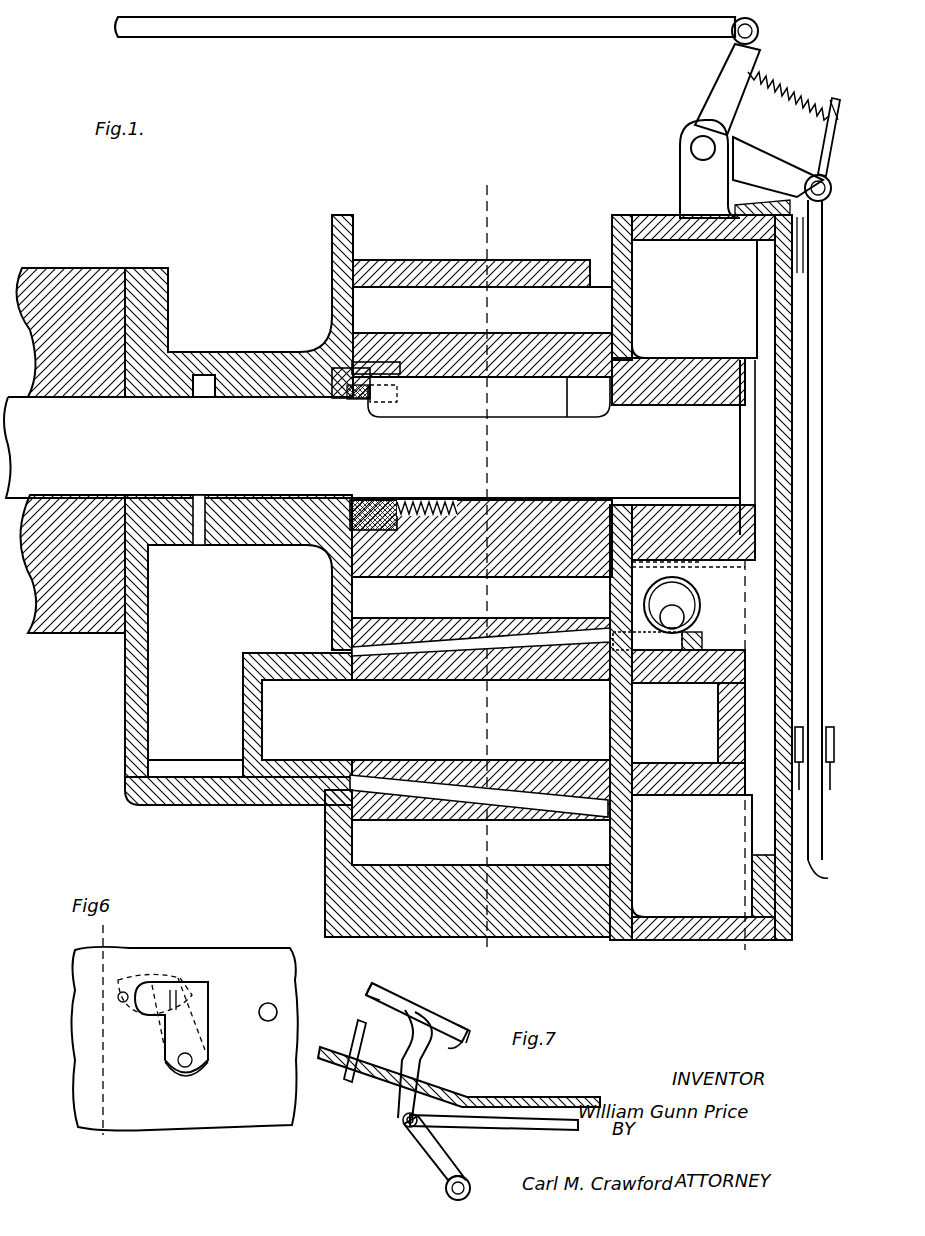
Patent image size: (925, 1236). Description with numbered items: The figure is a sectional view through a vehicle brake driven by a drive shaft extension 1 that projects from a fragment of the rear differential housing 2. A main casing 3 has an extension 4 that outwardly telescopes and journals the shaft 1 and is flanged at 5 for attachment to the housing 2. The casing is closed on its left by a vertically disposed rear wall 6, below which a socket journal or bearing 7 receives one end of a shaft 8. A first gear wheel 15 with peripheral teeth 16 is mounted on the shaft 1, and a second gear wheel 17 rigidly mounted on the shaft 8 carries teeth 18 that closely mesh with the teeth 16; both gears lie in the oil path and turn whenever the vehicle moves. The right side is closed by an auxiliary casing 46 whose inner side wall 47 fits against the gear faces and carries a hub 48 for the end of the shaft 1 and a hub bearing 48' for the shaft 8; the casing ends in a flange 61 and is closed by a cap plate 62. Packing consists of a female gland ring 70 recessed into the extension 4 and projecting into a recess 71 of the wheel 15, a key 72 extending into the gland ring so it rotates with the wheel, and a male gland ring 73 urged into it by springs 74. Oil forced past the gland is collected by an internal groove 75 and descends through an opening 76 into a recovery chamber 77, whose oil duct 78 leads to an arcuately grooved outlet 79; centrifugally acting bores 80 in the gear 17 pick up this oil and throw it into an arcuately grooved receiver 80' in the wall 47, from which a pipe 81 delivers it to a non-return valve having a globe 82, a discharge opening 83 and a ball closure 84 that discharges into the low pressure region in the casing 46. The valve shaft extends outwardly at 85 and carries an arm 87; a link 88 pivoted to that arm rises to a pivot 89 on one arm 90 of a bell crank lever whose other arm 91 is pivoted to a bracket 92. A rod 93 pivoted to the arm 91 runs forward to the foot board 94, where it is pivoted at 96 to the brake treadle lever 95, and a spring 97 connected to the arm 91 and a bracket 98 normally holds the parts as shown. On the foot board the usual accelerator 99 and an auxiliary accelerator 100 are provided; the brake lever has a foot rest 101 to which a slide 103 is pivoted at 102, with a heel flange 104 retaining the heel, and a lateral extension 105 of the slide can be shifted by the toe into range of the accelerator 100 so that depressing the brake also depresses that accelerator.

In FIG. 1, the extension of the drive shaft 1 is at (203, 433).
In FIG. 1, the rear differential housing 2 is at (62, 276).
In FIG. 1, the main casing 3 is at (332, 283).
In FIG. 1, the extension of the main casing 4 is at (200, 352).
In FIG. 1, the flange 5 is at (160, 292).
In FIG. 1, the rear wall 6 is at (332, 600).
In FIG. 1, the socket journal or bearing 7 is at (258, 660).
In FIG. 6, the socket journal or bearing 7 is at (101, 1035).
In FIG. 1, the shaft of the second gear wheel 8 is at (300, 716).
In FIG. 1, the first gear wheel 15 is at (510, 300).
In FIG. 1, the gear teeth of the first gear wheel 16 is at (505, 345).
In FIG. 1, the second gear wheel 17 is at (365, 840).
In FIG. 1, the teeth of the second gear wheel 18 is at (342, 870).
In FIG. 1, the auxiliary casing 46 is at (638, 224).
In FIG. 1, the inner side wall of the auxiliary casing 47 is at (640, 340).
In FIG. 1, the hub 48 is at (678, 364).
In FIG. 1, the hub bearing 48' is at (675, 758).
In FIG. 1, the flange 61 is at (748, 888).
In FIG. 1, the cap plate 62 is at (795, 915).
In FIG. 1, the female gland ring 70 is at (345, 398).
In FIG. 1, the recess 71 is at (385, 362).
In FIG. 1, the key 72 is at (545, 402).
In FIG. 1, the male gland member or ring 73 is at (382, 500).
In FIG. 1, the springs 74 is at (440, 500).
In FIG. 1, the internal groove 75 is at (205, 388).
In FIG. 1, the opening 76 is at (200, 542).
In FIG. 1, the recovery chamber 77 is at (190, 680).
In FIG. 1, the oil duct 78 is at (235, 800).
In FIG. 1, the arcuately grooved outlet 79 is at (300, 804).
In FIG. 1, the centrifugally acting bores 80 is at (480, 719).
In FIG. 1, the arcuately grooved receiver 80' is at (585, 672).
In FIG. 1, the pipe 81 is at (650, 660).
In FIG. 1, the globe of the non-return valve 82 is at (702, 603).
In FIG. 1, the discharge opening 83 is at (688, 574).
In FIG. 1, the ball closure 84 is at (684, 620).
In FIG. 1, the shaft extension 85 is at (716, 607).
In FIG. 1, the arm 87 is at (814, 805).
In FIG. 1, the link 88 is at (824, 548).
In FIG. 1, the pivot 89 is at (805, 192).
In FIG. 1, the arm of the bell crank lever 90 is at (778, 165).
In FIG. 1, the arm of the bell crank lever 91 is at (722, 85).
In FIG. 1, the bracket 92 is at (682, 157).
In FIG. 1, the rod 93 is at (420, 37).
In FIG. 7, the rod 93 is at (510, 1128).
In FIG. 6, the foot board 94 is at (78, 1072).
In FIG. 7, the foot board 94 is at (520, 1097).
In FIG. 7, the brake treadle lever 95 is at (425, 1152).
In FIG. 7, the pivot 96 is at (402, 1120).
In FIG. 1, the spring 97 is at (766, 78).
In FIG. 1, the bracket 98 is at (837, 98).
In FIG. 6, the accelerator 99 is at (266, 1021).
In FIG. 6, the auxiliary accelerator 100 is at (118, 997).
In FIG. 7, the auxiliary accelerator 100 is at (362, 1030).
In FIG. 7, the foot rest 101 is at (375, 998).
In FIG. 6, the pivot 102 is at (192, 1062).
In FIG. 7, the pivot 102 is at (470, 1054).
In FIG. 6, the slide 103 is at (190, 1020).
In FIG. 7, the slide 103 is at (416, 1003).
In FIG. 6, the heel flange 104 is at (172, 1075).
In FIG. 7, the heel flange 104 is at (470, 1030).
In FIG. 6, the lateral extension 105 is at (155, 970).
In FIG. 7, the lateral extension 105 is at (380, 972).